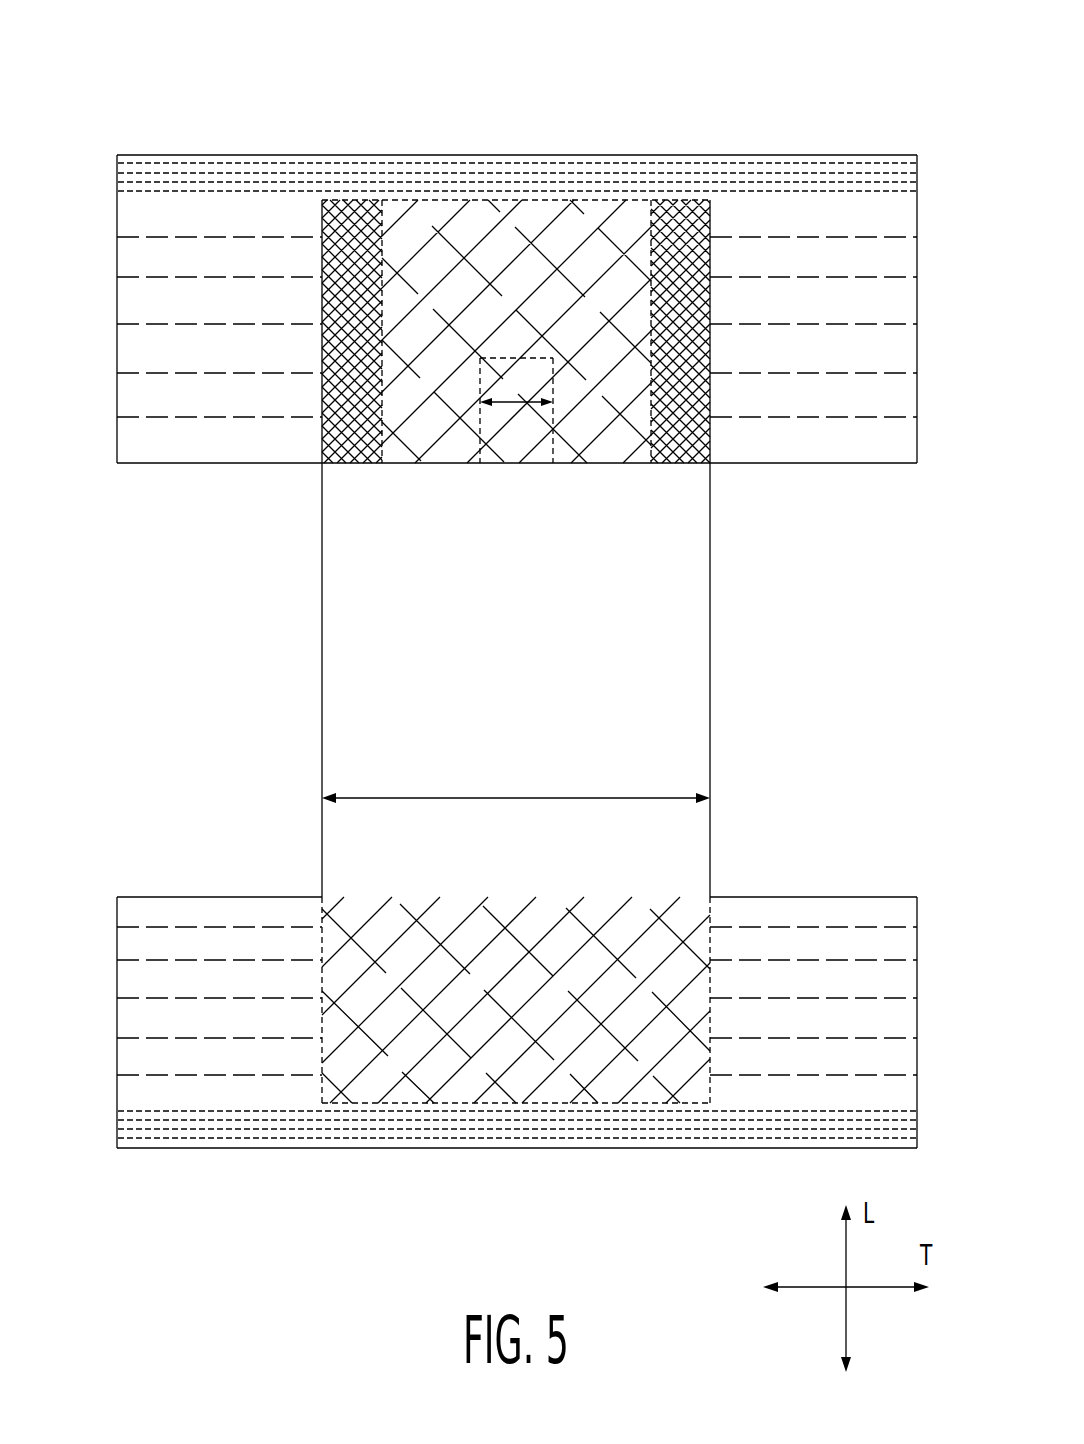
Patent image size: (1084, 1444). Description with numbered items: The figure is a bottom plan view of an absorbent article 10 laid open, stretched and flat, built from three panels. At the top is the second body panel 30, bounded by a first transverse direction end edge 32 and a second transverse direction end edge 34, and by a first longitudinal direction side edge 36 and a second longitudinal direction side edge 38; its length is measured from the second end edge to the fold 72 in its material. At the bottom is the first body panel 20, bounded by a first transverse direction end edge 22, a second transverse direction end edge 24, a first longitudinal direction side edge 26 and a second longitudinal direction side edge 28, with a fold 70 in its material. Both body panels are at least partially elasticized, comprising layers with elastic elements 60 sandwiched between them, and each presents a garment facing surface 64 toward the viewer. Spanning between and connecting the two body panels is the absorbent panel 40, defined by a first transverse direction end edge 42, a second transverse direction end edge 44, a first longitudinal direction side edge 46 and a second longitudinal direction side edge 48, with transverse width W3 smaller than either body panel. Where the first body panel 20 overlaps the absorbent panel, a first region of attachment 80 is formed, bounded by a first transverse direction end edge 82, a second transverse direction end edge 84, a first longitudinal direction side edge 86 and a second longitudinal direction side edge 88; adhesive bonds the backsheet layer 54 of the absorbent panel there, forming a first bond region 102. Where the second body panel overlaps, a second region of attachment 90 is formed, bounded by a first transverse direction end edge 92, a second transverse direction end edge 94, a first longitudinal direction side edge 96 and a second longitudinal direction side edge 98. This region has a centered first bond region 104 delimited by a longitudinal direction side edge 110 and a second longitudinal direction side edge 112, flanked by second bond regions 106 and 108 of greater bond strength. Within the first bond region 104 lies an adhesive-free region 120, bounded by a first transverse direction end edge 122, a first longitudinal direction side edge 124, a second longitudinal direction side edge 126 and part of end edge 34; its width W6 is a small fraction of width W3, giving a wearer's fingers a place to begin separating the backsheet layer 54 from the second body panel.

The absorbent article 10 is at (176, 54).
The first body panel 20 is at (137, 1022).
The first transverse direction end edge 22 is at (857, 1077).
The second transverse direction end edge 24 is at (807, 897).
The first longitudinal direction side edge 26 is at (117, 967).
The second longitudinal direction side edge 28 is at (918, 980).
The second body panel 30 is at (167, 447).
The first transverse direction end edge 32 is at (853, 237).
The second transverse direction end edge 34 is at (833, 467).
The first longitudinal direction side edge 36 is at (117, 297).
The second longitudinal direction side edge 38 is at (918, 466).
The absorbent panel 40 is at (675, 707).
The first transverse direction end edge 42 is at (510, 1130).
The second transverse direction end edge 44 is at (647, 240).
The first longitudinal direction side edge 46 is at (322, 648).
The second longitudinal direction side edge 48 is at (712, 633).
The backsheet layer 54 is at (672, 578).
The elastic elements 60 is at (803, 175).
The garment facing surface 64 is at (828, 311).
The fold 70 is at (408, 1150).
The fold 72 is at (535, 155).
The first region of attachment 80 is at (671, 932).
The first transverse direction end edge 82 is at (598, 1125).
The second transverse direction end edge 84 is at (503, 897).
The first longitudinal direction side edge 86 is at (322, 977).
The second longitudinal direction side edge 88 is at (712, 1015).
The second region of attachment 90 is at (402, 458).
The first transverse direction end edge 92 is at (485, 200).
The second transverse direction end edge 94 is at (436, 465).
The first longitudinal direction side edge 96 is at (320, 350).
The second longitudinal direction side edge 98 is at (712, 293).
The first bond region 102 is at (357, 906).
The first bond region 104 is at (632, 440).
The second bond region 106 is at (355, 208).
The second bond region 108 is at (689, 463).
The longitudinal direction side edge 110 is at (388, 218).
The second longitudinal direction side edge 112 is at (655, 185).
The adhesive-free region 120 is at (520, 462).
The first transverse direction end edge 122 is at (515, 358).
The first longitudinal direction side edge 124 is at (488, 448).
The second longitudinal direction side edge 126 is at (543, 430).
The transverse direction width W3 is at (512, 797).
The width W6 is at (516, 386).